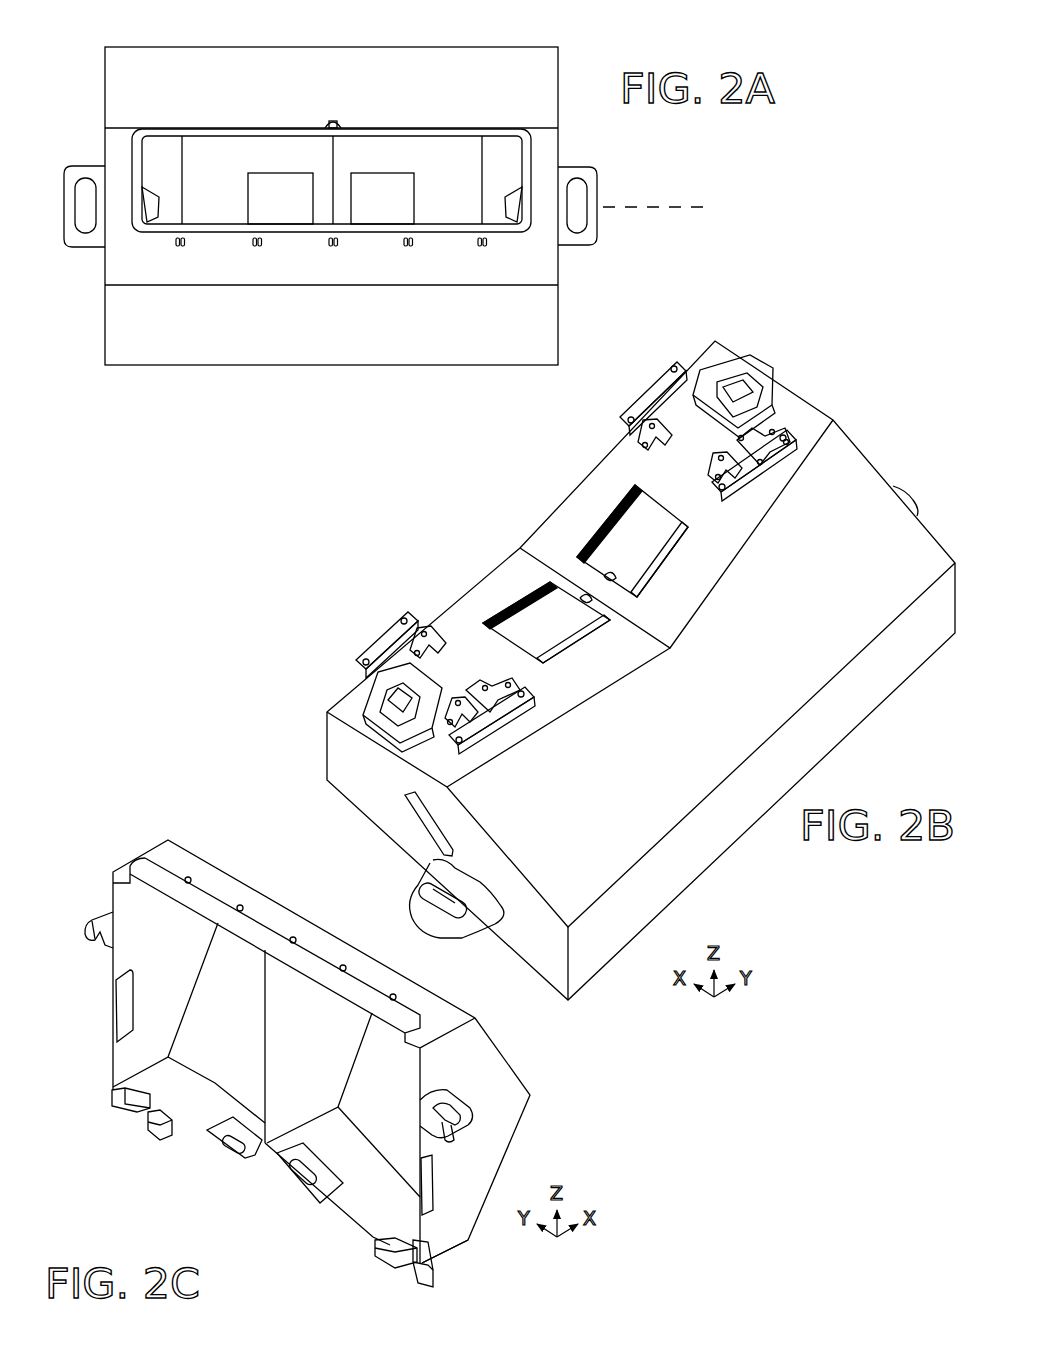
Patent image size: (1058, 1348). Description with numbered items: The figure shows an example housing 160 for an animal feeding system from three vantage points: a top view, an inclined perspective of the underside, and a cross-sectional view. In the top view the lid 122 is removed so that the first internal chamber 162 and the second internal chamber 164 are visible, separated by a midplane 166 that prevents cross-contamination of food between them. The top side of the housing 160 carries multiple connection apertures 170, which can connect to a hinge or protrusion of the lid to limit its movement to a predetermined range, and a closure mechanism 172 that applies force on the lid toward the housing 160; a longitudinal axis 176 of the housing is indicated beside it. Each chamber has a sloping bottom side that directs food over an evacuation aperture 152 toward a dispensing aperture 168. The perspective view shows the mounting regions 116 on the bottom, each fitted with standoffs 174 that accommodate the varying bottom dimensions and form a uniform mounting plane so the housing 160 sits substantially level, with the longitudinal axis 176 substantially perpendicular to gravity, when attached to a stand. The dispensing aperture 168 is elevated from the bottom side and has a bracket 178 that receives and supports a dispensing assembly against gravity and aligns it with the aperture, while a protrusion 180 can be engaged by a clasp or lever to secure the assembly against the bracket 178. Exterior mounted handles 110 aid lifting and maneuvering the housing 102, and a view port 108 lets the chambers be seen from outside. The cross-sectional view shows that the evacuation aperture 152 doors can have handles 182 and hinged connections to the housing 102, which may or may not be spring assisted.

In FIG. 2B, the housing 102 is at (887, 480).
In FIG. 2C, the housing 102 is at (529, 1096).
In FIG. 2B, the view port 108 is at (420, 822).
In FIG. 2C, the view port 108 is at (112, 1004).
In FIG. 2A, the exterior mounted handle 110 is at (70, 167).
In FIG. 2B, the exterior mounted handle 110 is at (505, 922).
In FIG. 2C, the exterior mounted handle 110 is at (93, 920).
In FIG. 2B, the mounting region 116 is at (587, 824).
In FIG. 2C, the lid 122 is at (166, 860).
In FIG. 2A, the evacuation aperture 152 is at (300, 211).
In FIG. 2B, the evacuation aperture 152 is at (660, 576).
In FIG. 2C, the evacuation aperture 152 is at (230, 1122).
In FIG. 2A, the housing 160 is at (128, 30).
In FIG. 2B, the housing 160 is at (426, 492).
In FIG. 2C, the housing 160 is at (133, 828).
In FIG. 2A, the first internal chamber 162 is at (218, 158).
In FIG. 2C, the first internal chamber 162 is at (362, 1207).
In FIG. 2A, the second internal chamber 164 is at (432, 161).
In FIG. 2C, the second internal chamber 164 is at (122, 1067).
In FIG. 2A, the midplane 166 is at (335, 160).
In FIG. 2C, the midplane 166 is at (317, 1052).
In FIG. 2A, the dispensing aperture 168 is at (152, 196).
In FIG. 2C, the dispensing aperture 168 is at (132, 1113).
In FIG. 2A, the connection aperture 170 is at (333, 252).
In FIG. 2C, the connection aperture 170 is at (278, 893).
In FIG. 2A, the closure mechanism 172 is at (333, 120).
In FIG. 2B, the standoff 174 is at (632, 420).
In FIG. 2A, the longitudinal axis 176 is at (659, 205).
In FIG. 2B, the bracket 178 is at (707, 425).
In FIG. 2C, the bracket 178 is at (157, 1142).
In FIG. 2B, the protrusion 180 is at (782, 360).
In FIG. 2C, the handle 182 is at (228, 1154).